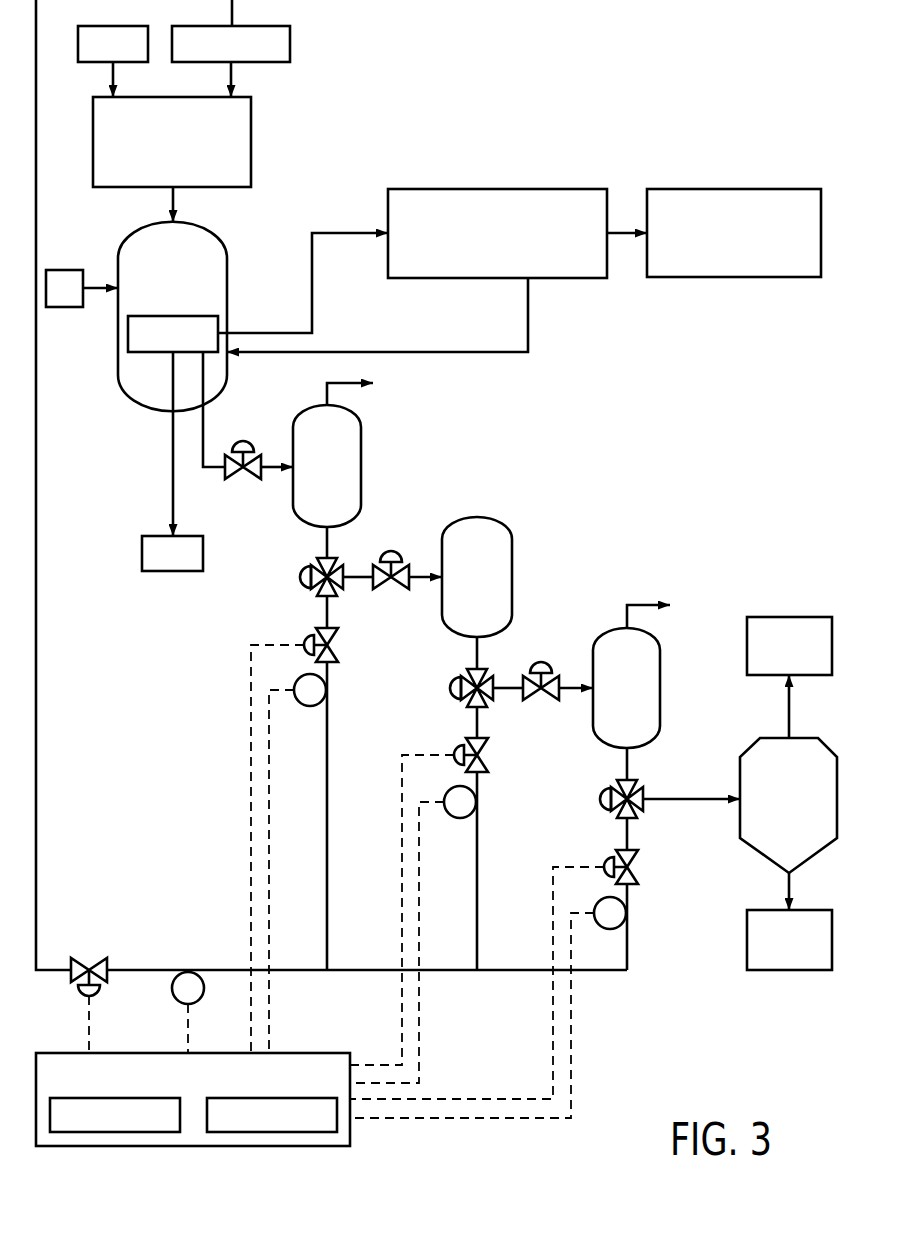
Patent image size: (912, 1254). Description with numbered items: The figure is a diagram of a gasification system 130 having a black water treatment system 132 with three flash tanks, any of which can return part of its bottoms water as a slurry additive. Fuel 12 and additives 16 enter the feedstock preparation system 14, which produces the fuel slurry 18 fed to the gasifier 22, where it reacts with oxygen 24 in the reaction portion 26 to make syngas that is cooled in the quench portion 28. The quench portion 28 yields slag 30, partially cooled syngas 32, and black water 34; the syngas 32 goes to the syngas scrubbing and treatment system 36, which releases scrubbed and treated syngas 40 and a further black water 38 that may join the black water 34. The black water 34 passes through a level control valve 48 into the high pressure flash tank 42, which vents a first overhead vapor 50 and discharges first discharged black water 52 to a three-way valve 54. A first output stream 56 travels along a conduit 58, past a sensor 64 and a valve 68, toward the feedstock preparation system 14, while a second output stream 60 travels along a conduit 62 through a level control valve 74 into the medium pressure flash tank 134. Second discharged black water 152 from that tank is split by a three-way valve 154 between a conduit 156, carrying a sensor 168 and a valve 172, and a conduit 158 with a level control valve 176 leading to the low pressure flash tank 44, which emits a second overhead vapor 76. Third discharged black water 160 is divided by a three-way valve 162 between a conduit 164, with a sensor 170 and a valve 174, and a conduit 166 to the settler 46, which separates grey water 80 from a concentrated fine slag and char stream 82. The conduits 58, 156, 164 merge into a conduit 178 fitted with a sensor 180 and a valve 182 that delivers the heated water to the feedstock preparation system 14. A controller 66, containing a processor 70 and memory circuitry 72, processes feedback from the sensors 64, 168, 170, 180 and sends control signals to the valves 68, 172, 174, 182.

The fuel source 12 is at (78, 42).
The feedstock preparation system 14 is at (251, 148).
The additives 16 is at (290, 44).
The fuel slurry 18 is at (177, 196).
The gasifier 22 is at (222, 236).
The oxygen 24 is at (64, 270).
The reaction portion 26 is at (161, 265).
The quench portion 28 is at (128, 337).
The slag particles 30 is at (142, 556).
The partially cooled syngas 32 is at (262, 333).
The black water 34 is at (212, 470).
The syngas scrubbing and treatment system 36 is at (498, 189).
The black water 38 is at (378, 352).
The scrubbed and treated syngas 40 is at (735, 189).
The high pressure flash tank 42 is at (361, 456).
The low pressure flash tank 44 is at (660, 687).
The settler 46 is at (818, 858).
The level control valve 48 is at (243, 480).
The first overhead vapor 50 is at (365, 389).
The first discharged black water 52 is at (327, 540).
The three-way valve 54 is at (302, 580).
The first output stream 56 is at (327, 613).
The conduit 58 is at (327, 818).
The second output stream 60 is at (352, 580).
The conduit 62 is at (416, 574).
The sensor 64 is at (312, 706).
The controller 66 is at (312, 1053).
The valve 68 is at (338, 654).
The processor 70 is at (115, 1132).
The memory circuitry 72 is at (272, 1132).
The level control valve 74 is at (389, 549).
The second overhead vapor 76 is at (665, 611).
The grey water 80 is at (747, 646).
The concentrated fine slag and char stream 82 is at (788, 970).
The gasification system 130 is at (668, 56).
The black water treatment system 132 is at (700, 467).
The medium pressure flash tank 134 is at (512, 577).
The second discharged black water 152 is at (477, 656).
The three-way valve 154 is at (452, 690).
The conduit 156 is at (477, 723).
The conduit 158 is at (563, 686).
The third discharged black water 160 is at (627, 767).
The three-way valve 162 is at (601, 800).
The conduit 164 is at (627, 834).
The conduit 166 is at (690, 798).
The sensor 168 is at (462, 818).
The sensor 170 is at (612, 929).
The valve 172 is at (487, 765).
The valve 174 is at (636, 860).
The level control valve 176 is at (541, 660).
The conduit 178 is at (54, 968).
The sensor 180 is at (172, 988).
The valve 182 is at (98, 962).